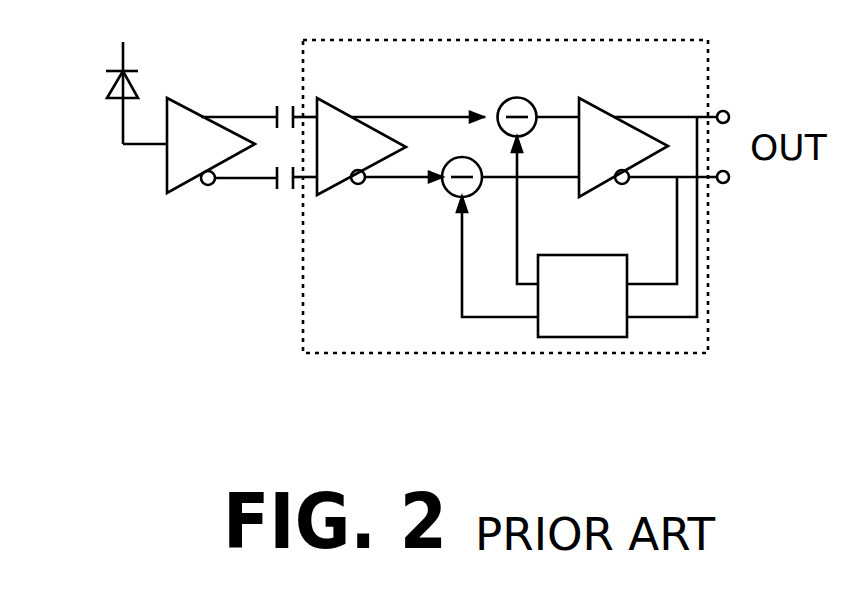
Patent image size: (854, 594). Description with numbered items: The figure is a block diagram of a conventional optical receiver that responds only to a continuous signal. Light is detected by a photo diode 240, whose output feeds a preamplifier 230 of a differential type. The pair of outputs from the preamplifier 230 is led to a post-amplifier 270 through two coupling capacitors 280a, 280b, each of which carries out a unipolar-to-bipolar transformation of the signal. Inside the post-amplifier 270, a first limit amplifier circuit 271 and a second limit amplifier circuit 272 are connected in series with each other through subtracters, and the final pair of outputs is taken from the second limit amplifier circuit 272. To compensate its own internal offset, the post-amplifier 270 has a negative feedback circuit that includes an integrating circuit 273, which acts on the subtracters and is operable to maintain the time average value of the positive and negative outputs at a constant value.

The preamplifier 230 is at (173, 193).
The photo diode 240 is at (110, 98).
The post-amplifier 270 is at (470, 353).
The limit amplifier circuit 271 is at (348, 107).
The limit amplifier circuit 272 is at (606, 103).
The integrating circuit 273 is at (600, 337).
The coupling capacitor 280a is at (287, 97).
The coupling capacitor 280b is at (283, 195).